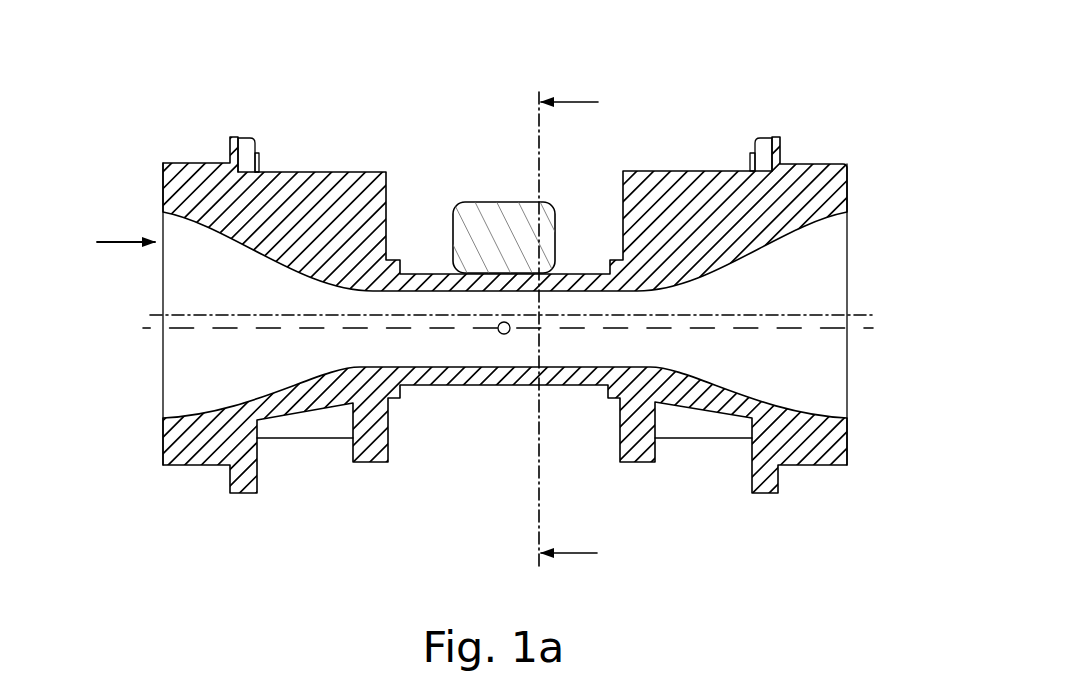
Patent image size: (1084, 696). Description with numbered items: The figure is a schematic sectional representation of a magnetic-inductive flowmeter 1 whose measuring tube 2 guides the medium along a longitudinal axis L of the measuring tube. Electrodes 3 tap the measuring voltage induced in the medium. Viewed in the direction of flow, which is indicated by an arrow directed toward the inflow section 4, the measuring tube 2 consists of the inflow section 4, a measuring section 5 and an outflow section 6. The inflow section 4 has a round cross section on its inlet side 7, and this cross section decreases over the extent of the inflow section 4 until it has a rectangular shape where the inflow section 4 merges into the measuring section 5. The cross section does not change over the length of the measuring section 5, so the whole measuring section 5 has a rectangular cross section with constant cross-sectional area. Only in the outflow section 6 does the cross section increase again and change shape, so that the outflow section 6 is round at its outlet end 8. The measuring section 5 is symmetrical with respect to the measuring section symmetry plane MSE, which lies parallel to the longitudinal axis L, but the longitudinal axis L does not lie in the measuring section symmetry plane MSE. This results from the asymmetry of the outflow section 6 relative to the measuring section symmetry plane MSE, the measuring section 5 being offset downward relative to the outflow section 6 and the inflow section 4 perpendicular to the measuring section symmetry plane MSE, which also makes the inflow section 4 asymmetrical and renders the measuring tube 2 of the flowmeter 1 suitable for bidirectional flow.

The magnetic-inductive flowmeter 1 is at (128, 120).
The measuring tube 2 is at (157, 440).
The electrodes 3 is at (503, 335).
The inflow section 4 is at (230, 250).
The measuring section 5 is at (492, 305).
The outflow section 6 is at (789, 250).
The inlet side 7 is at (153, 378).
The outlet end 8 is at (862, 237).
The longitudinal axis L is at (155, 315).
The measuring section symmetry plane MSE is at (868, 330).